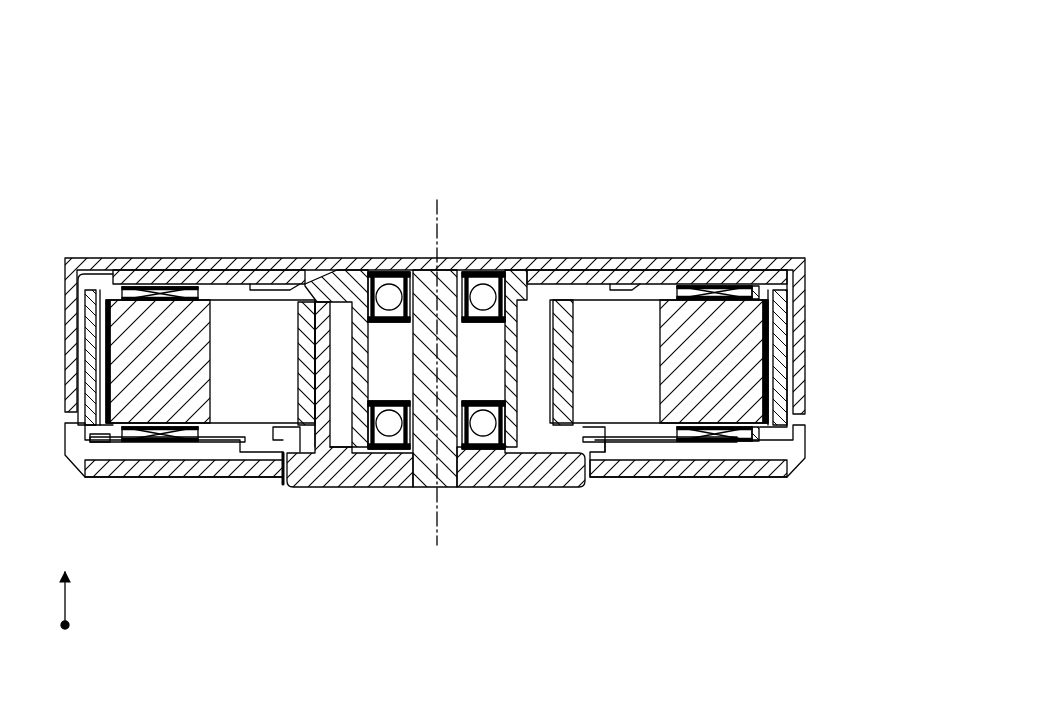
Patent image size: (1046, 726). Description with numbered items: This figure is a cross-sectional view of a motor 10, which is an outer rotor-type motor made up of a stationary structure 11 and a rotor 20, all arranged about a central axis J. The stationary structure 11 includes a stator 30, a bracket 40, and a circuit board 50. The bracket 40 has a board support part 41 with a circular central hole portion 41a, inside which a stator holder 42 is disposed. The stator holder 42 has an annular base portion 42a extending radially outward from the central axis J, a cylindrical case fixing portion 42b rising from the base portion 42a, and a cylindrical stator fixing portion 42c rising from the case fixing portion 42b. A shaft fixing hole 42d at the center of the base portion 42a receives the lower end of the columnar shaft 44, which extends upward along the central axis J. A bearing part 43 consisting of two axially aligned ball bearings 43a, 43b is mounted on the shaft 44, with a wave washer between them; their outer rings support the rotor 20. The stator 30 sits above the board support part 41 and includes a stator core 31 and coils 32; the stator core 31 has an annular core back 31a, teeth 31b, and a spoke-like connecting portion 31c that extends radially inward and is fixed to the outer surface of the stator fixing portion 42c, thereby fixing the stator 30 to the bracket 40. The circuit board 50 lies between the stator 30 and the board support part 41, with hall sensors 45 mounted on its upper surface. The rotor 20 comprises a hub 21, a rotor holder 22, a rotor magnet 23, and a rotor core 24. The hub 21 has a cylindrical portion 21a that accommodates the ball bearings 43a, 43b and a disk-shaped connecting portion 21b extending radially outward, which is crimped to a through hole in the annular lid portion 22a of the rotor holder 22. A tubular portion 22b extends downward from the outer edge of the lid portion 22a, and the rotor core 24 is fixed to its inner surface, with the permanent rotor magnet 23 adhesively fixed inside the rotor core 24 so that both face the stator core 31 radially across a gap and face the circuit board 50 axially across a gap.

The motor 10 is at (735, 113).
The stationary structure 11 is at (745, 485).
The rotor 20 is at (495, 241).
The hub 21 is at (618, 203).
The cylindrical portion 21a is at (515, 345).
The connecting portion 21b is at (570, 286).
The rotor holder 22 is at (848, 194).
The lid portion 22a is at (469, 309).
The tubular portion 22b is at (796, 271).
The rotor magnet 23 is at (774, 378).
The rotor core 24 is at (778, 333).
The stator 30 is at (660, 297).
The stator core 31 is at (318, 198).
The core back 31a is at (195, 330).
The teeth 31b is at (165, 325).
The connecting portion 31c is at (306, 312).
The coils 32 is at (125, 285).
The bracket 40 is at (645, 551).
The board support part 41 is at (603, 464).
The central hole portion 41a is at (297, 456).
The stator holder 42 is at (548, 483).
The base portion 42a is at (300, 468).
The case fixing portion 42b is at (322, 440).
The stator fixing portion 42c is at (348, 461).
The shaft fixing hole 42d is at (456, 463).
The bearing part 43 is at (478, 160).
The ball bearing 43a is at (393, 298).
The ball bearing 43b is at (480, 418).
The shaft 44 is at (428, 480).
The hall sensors 45 is at (98, 447).
The circuit board 50 is at (174, 447).
The central axis J is at (437, 517).